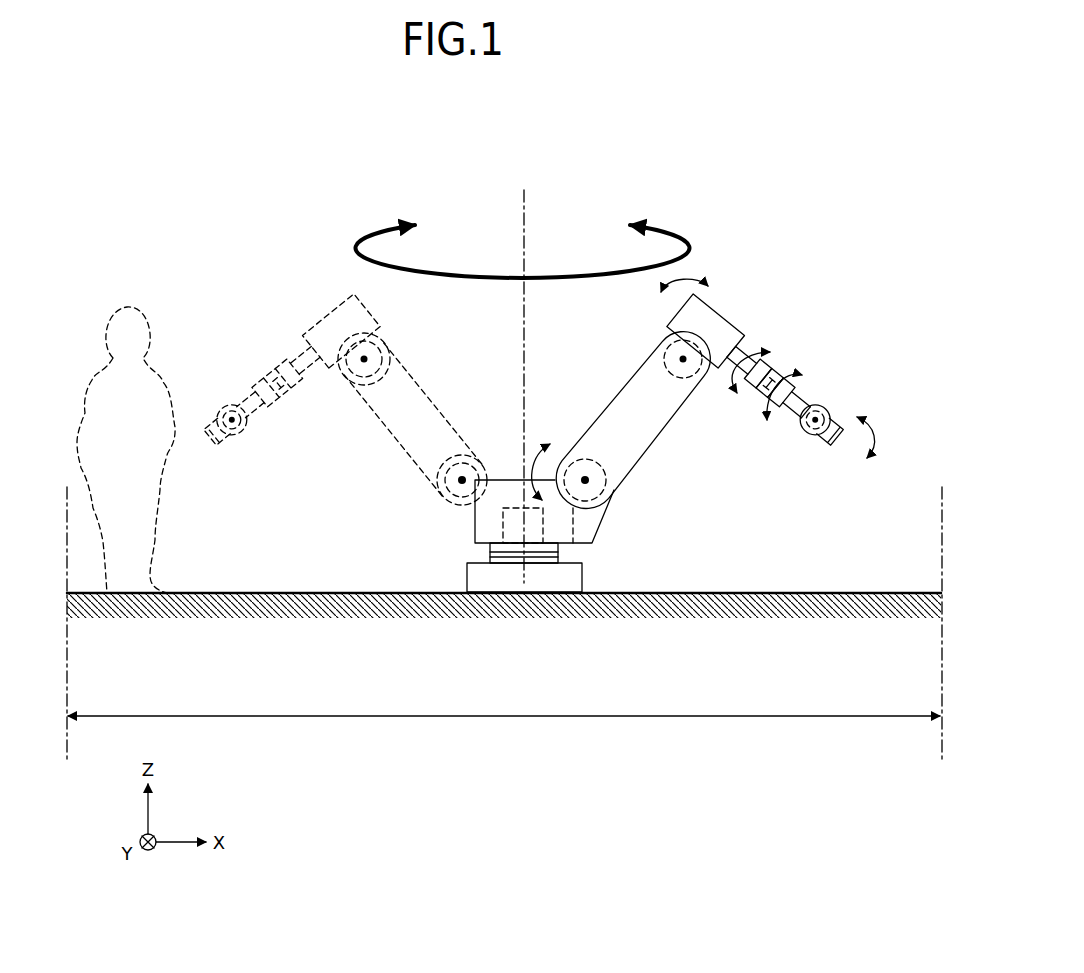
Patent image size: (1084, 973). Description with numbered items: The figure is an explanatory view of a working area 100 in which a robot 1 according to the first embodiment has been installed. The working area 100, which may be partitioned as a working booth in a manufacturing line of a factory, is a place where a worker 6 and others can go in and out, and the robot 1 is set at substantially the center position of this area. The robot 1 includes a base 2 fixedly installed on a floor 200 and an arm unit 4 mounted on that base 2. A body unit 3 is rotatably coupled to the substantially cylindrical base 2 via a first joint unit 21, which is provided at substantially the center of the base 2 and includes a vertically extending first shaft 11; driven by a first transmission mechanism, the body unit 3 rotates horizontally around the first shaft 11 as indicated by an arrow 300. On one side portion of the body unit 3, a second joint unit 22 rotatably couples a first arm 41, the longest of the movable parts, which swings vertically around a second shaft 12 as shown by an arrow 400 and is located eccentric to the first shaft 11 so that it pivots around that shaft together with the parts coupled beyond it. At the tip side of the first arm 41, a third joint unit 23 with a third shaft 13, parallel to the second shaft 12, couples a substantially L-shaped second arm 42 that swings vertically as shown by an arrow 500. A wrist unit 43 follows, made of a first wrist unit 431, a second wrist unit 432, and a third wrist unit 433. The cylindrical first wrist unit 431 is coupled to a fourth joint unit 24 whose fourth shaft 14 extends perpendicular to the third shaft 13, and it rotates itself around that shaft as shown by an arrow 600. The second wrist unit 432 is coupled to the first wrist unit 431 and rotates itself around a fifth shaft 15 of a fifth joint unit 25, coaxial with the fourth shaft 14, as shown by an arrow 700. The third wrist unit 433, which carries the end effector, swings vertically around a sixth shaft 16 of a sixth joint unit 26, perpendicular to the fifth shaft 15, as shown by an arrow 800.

The robot 1 is at (781, 160).
The base 2 is at (467, 576).
The body unit 3 is at (598, 536).
The arm unit 4 is at (595, 408).
The worker 6 is at (127, 306).
The first shaft 11 is at (520, 208).
The second shaft 12 is at (585, 480).
The third shaft 13 is at (683, 359).
The fourth shaft 14 is at (739, 367).
The fifth shaft 15 is at (789, 408).
The sixth shaft 16 is at (826, 409).
The first joint unit 21 is at (475, 528).
The second joint unit 22 is at (620, 487).
The third joint unit 23 is at (662, 360).
The fourth joint unit 24 is at (748, 382).
The fifth joint unit 25 is at (762, 393).
The sixth joint unit 26 is at (815, 435).
The first arm 41 is at (627, 455).
The second arm 42 is at (719, 314).
The wrist unit 43 is at (824, 328).
The first wrist unit 431 is at (766, 364).
The second wrist unit 432 is at (778, 374).
The third wrist unit 433 is at (790, 383).
The working area 100 is at (522, 717).
The floor 200 is at (815, 592).
The arrow 300 is at (370, 238).
The arrow 400 is at (525, 447).
The arrow 500 is at (693, 274).
The arrow 600 is at (768, 350).
The arrow 700 is at (773, 430).
The arrow 800 is at (878, 439).